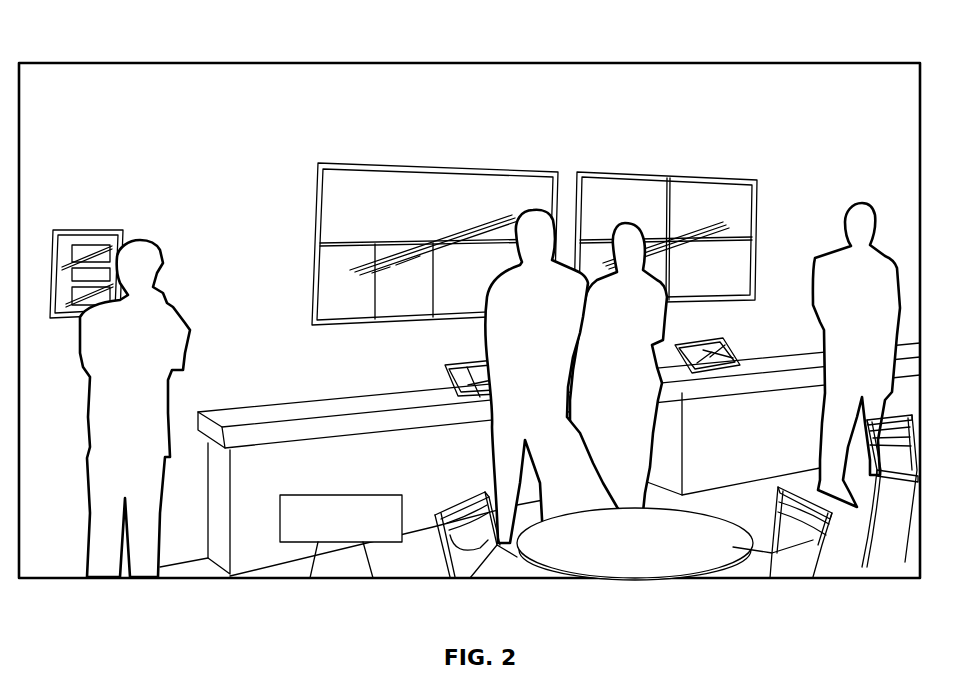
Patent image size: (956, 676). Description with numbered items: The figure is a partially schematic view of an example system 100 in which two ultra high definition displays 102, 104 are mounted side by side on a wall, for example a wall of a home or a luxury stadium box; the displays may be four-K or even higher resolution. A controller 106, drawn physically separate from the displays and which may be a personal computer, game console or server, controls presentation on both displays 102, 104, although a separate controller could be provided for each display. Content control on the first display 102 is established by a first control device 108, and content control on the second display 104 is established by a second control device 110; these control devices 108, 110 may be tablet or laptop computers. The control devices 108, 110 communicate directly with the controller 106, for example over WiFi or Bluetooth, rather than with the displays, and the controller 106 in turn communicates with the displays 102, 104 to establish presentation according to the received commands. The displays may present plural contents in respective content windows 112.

The system 100 is at (227, 55).
The first display 102 is at (476, 166).
The second display 104 is at (692, 174).
The controller 106 is at (390, 494).
The first control device 108 is at (445, 370).
The second control device 110 is at (713, 338).
The content windows 112 is at (335, 220).